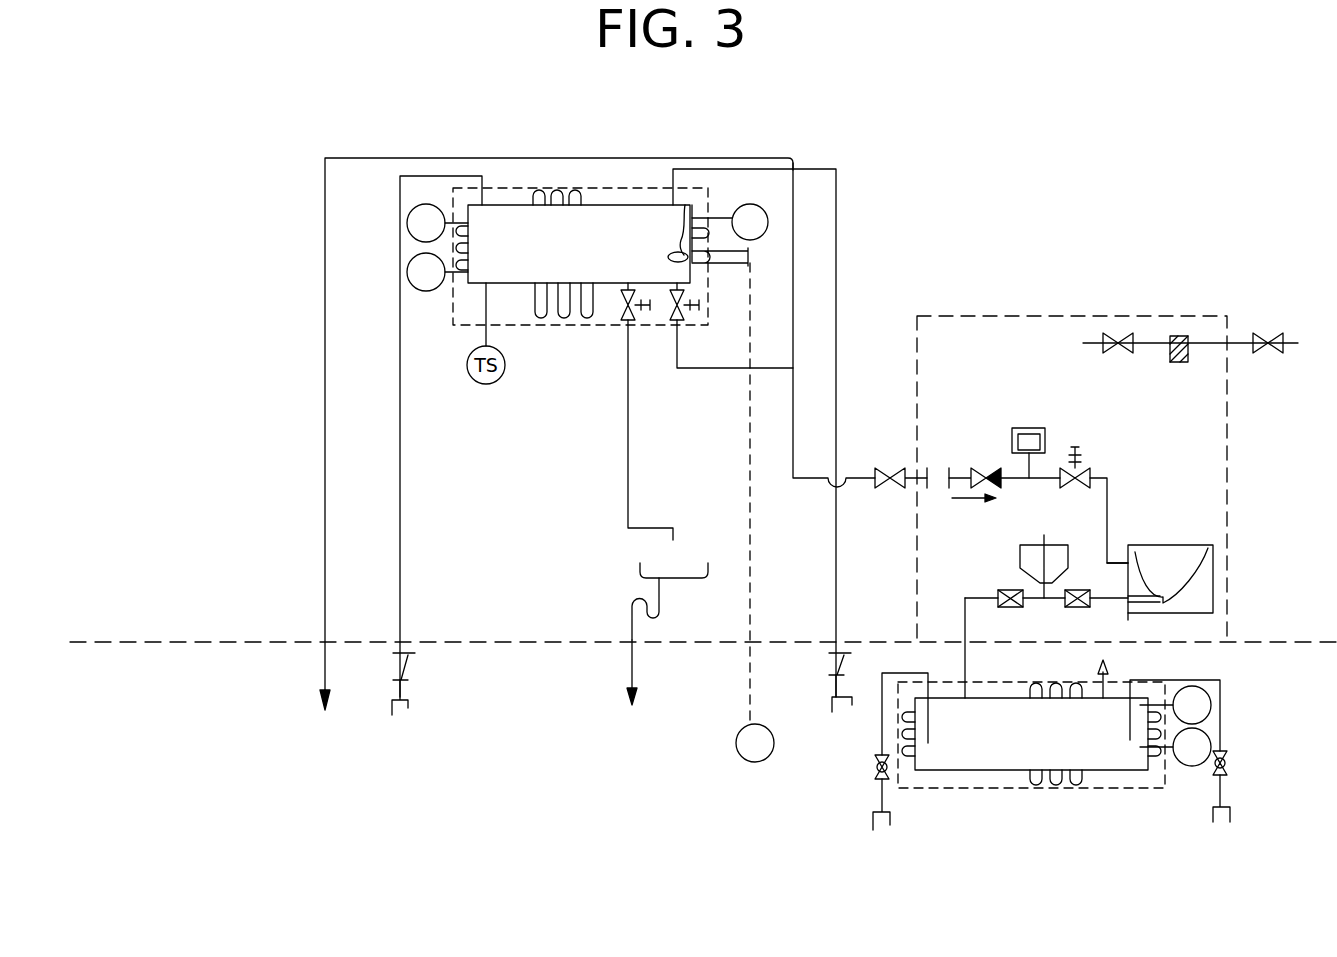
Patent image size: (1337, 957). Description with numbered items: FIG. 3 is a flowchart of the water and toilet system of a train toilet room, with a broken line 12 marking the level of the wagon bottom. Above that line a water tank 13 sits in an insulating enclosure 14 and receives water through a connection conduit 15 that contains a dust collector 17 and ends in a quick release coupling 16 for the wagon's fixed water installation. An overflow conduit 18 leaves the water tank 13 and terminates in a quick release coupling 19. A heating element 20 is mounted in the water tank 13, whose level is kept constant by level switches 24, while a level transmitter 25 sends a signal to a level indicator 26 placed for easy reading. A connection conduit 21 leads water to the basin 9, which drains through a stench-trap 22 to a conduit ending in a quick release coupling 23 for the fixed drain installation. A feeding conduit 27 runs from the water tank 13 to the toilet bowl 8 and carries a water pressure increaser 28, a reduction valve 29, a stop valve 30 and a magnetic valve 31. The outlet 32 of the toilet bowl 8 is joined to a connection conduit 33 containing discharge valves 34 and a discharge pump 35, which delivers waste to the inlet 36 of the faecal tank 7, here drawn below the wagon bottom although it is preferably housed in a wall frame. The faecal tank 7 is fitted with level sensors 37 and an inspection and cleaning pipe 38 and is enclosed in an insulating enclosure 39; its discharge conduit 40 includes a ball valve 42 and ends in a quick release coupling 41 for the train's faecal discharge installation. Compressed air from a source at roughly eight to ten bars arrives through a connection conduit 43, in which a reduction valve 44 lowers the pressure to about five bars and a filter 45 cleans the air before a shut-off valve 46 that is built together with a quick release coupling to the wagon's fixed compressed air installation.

The faecal tank 7 is at (983, 757).
The toilet bowl 8 is at (1175, 557).
The basin 9 is at (676, 565).
The broken line 12 is at (262, 637).
The water tank 13 is at (620, 213).
The insulating enclosure 14 is at (566, 195).
The connection conduit 15 is at (400, 548).
The quick release coupling 16 is at (422, 703).
The dust collector 17 is at (407, 667).
The overflow conduit 18 is at (325, 392).
The quick release coupling 19 is at (325, 668).
The heating element 20 is at (685, 207).
The connection conduit 21 is at (628, 385).
The stench-trap 22 is at (661, 595).
The quick release coupling 23 is at (632, 657).
The level switches 24 is at (407, 226).
The level transmitter 25 is at (752, 204).
The level indicator 26 is at (737, 745).
The feeding conduit 27 is at (793, 272).
The water pressure increaser 28 is at (1048, 440).
The reduction valve 29 is at (895, 472).
The stop valve 30 is at (983, 470).
The magnetic valve 31 is at (1081, 462).
The outlet 32 is at (1138, 617).
The connection conduit 33 is at (1112, 599).
The discharge valves 34 is at (1018, 589).
The discharge pump 35 is at (1038, 555).
The inlet 36 is at (992, 690).
The level sensors 37 is at (1214, 692).
The inspection and cleaning pipe 38 is at (1157, 770).
The insulating enclosure 39 is at (1068, 787).
The discharge conduit 40 is at (880, 716).
The quick release coupling 41 is at (872, 815).
The ball valve 42 is at (874, 767).
The connection conduit 43 is at (1240, 343).
The reduction valve 44 is at (1122, 338).
The filter 45 is at (1177, 336).
The valve 46 is at (1262, 337).